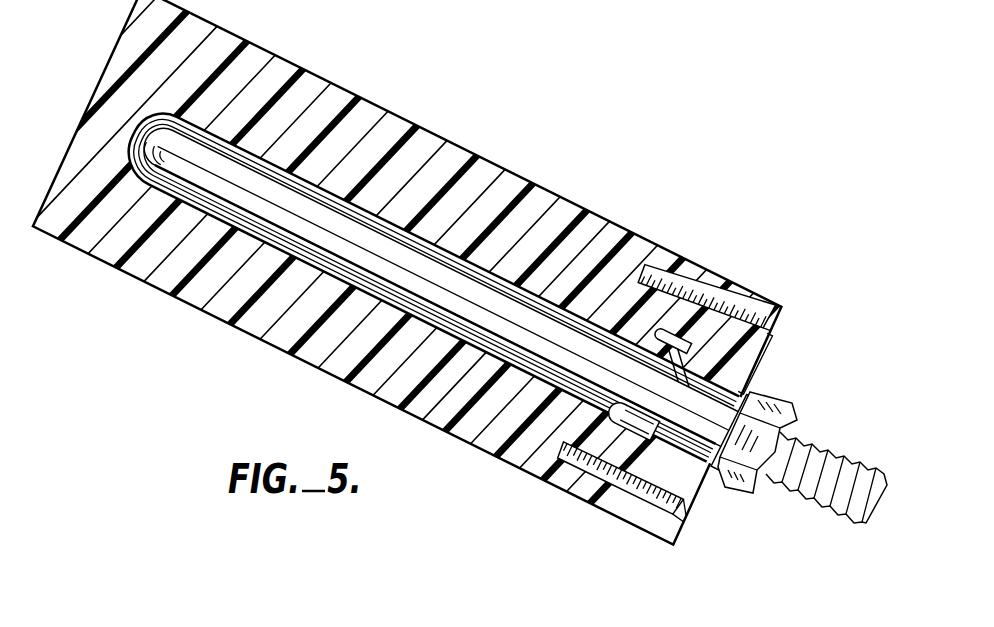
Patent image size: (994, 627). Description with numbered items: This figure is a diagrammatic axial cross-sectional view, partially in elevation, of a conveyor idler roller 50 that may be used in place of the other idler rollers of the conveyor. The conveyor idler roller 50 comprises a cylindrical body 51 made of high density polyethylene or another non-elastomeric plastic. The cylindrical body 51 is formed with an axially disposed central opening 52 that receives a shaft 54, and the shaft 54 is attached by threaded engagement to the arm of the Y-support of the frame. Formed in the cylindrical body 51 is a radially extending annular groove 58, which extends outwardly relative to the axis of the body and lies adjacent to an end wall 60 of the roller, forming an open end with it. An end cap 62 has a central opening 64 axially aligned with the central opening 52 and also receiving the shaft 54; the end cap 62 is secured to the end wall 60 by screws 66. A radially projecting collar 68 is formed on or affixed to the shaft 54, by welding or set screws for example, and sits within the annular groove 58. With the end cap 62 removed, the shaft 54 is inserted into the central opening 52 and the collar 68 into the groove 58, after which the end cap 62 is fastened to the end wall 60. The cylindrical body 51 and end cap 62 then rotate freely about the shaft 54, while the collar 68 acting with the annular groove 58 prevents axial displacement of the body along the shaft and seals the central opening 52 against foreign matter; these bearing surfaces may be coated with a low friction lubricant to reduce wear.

The conveyor idler roller 50 is at (512, 321).
The cylindrical body 51 is at (292, 63).
The central opening 52 is at (500, 297).
The shaft 54 is at (407, 270).
The annular groove 58 is at (660, 353).
The end wall 60 is at (722, 290).
The end cap 62 is at (772, 358).
The central opening of end cap 64 is at (747, 397).
The screws 66 is at (768, 330).
The radially projecting collar 68 is at (727, 463).